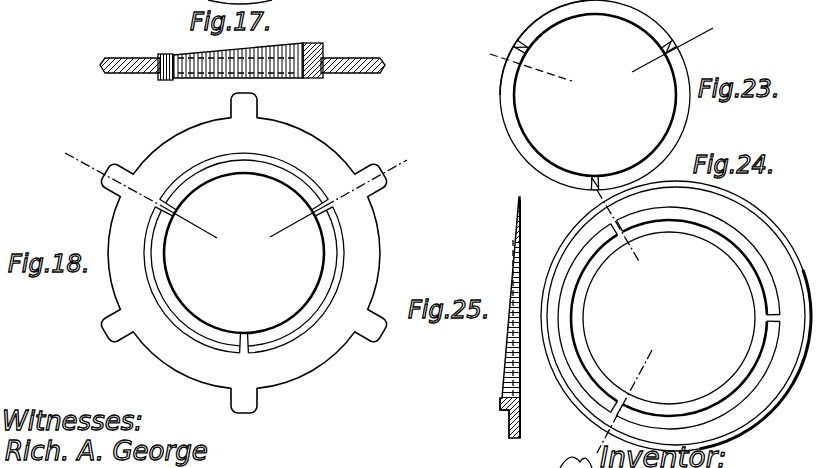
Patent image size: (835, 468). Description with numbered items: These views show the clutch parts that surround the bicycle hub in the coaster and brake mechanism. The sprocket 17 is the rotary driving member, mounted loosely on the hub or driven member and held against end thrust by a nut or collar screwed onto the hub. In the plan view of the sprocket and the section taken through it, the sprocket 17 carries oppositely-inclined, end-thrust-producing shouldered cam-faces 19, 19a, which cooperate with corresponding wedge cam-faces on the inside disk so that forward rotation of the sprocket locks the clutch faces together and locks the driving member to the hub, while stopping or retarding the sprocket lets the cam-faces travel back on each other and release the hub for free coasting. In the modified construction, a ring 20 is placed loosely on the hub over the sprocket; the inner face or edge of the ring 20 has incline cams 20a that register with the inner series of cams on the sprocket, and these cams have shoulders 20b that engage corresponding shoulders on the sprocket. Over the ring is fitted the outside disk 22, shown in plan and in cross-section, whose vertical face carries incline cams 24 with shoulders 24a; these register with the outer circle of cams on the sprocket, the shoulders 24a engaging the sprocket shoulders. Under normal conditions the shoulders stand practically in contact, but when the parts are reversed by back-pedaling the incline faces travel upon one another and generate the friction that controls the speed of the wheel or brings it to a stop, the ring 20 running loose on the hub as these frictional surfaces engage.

In FIG. 17, the sprocket 17 is at (385, 67).
In FIG. 18, the sprocket 17 is at (386, 181).
In FIG. 17, the shouldered cam-faces of the sprocket 19 is at (304, 44).
In FIG. 18, the shouldered cam-faces of the sprocket 19 is at (284, 180).
In FIG. 17, the shouldered cam-faces of the sprocket 19a is at (323, 52).
In FIG. 18, the shouldered cam-faces of the sprocket 19a is at (323, 205).
In FIG. 23, the ring 20 is at (692, 108).
In FIG. 23, the incline cams 20a is at (548, 20).
In FIG. 23, the shoulders 20b is at (512, 50).
In FIG. 24, the outside disk 22 is at (771, 223).
In FIG. 25, the outside disk 22 is at (512, 226).
In FIG. 24, the incline cams 24 is at (585, 270).
In FIG. 25, the incline cams 24 is at (505, 366).
In FIG. 24, the shoulders 24a is at (610, 232).
In FIG. 25, the shoulders 24a is at (507, 412).